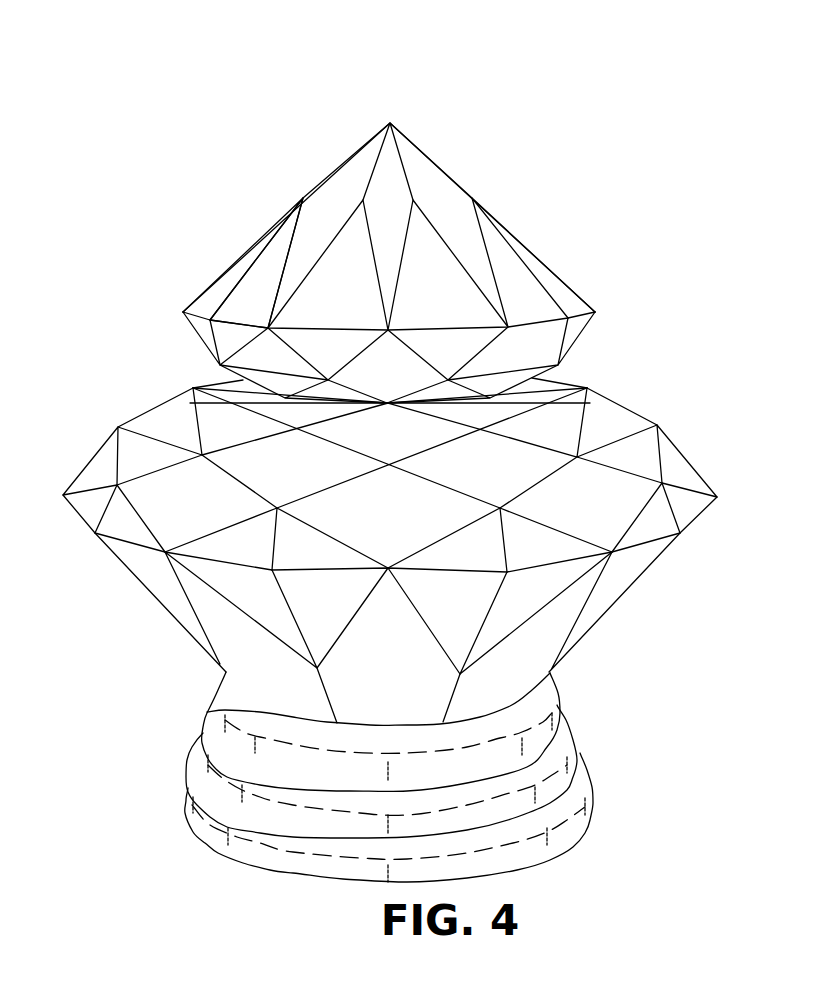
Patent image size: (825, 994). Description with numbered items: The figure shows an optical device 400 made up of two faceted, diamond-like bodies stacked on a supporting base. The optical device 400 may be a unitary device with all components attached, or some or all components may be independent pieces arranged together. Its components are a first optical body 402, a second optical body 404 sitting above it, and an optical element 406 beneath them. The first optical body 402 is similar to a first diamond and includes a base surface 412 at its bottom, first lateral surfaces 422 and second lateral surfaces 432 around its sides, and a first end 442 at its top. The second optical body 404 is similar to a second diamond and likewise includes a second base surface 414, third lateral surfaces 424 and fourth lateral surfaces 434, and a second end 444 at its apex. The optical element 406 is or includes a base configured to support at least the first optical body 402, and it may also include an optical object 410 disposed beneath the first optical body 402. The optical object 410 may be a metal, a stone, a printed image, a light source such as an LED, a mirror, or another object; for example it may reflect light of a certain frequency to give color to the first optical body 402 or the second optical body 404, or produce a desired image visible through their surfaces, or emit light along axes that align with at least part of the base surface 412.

The optical device 400 is at (205, 84).
The first optical body 402 is at (364, 533).
The second optical body 404 is at (370, 385).
The optical element 406 is at (190, 795).
The optical object 410 is at (366, 680).
The base surface 412 is at (307, 698).
The second base surface 414 is at (320, 405).
The first lateral surface 422 is at (502, 657).
The third lateral surface 424 is at (206, 334).
The second lateral surface 432 is at (630, 487).
The fourth lateral surface 434 is at (295, 315).
The first end 442 is at (466, 403).
The second end 444 is at (390, 123).